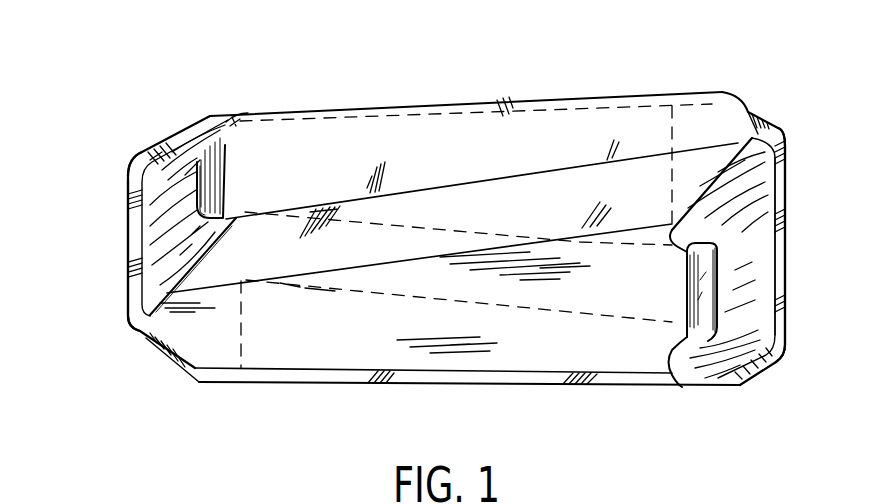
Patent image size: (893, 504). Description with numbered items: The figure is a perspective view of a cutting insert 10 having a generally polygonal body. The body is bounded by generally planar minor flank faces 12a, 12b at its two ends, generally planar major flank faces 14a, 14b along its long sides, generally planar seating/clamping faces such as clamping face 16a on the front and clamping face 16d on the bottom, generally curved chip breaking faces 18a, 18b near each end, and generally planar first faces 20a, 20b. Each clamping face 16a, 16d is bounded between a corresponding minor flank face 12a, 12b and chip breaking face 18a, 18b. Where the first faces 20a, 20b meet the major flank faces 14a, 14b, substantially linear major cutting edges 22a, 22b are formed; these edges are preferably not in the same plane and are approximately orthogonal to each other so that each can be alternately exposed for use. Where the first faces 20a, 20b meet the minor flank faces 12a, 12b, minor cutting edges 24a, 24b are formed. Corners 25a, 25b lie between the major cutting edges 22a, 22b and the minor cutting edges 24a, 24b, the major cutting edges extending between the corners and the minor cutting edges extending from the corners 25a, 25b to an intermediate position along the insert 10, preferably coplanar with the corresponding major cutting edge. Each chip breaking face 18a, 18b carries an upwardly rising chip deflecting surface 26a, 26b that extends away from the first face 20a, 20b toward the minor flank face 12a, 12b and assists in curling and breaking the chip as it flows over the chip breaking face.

The cutting insert 10 is at (99, 80).
The minor flank face 12a is at (343, 140).
The minor flank face 12b is at (568, 347).
The major flank face 14a is at (176, 245).
The major flank face 14b is at (765, 253).
The seating/clamping face 16a is at (407, 242).
The seating/clamping face 16d is at (303, 375).
The chip breaking face 18a is at (177, 153).
The chip breaking face 18b is at (745, 256).
The first face 20a is at (128, 232).
The first face 20b is at (784, 200).
The major cutting edge 22a is at (128, 272).
The major cutting edge 22b is at (787, 286).
The minor cutting edge 24a is at (147, 143).
The minor cutting edge 24b is at (746, 110).
The corner 25a is at (128, 170).
The corner 25b is at (779, 127).
The chip deflecting surface 26a is at (233, 110).
The chip deflecting surface 26b is at (680, 376).